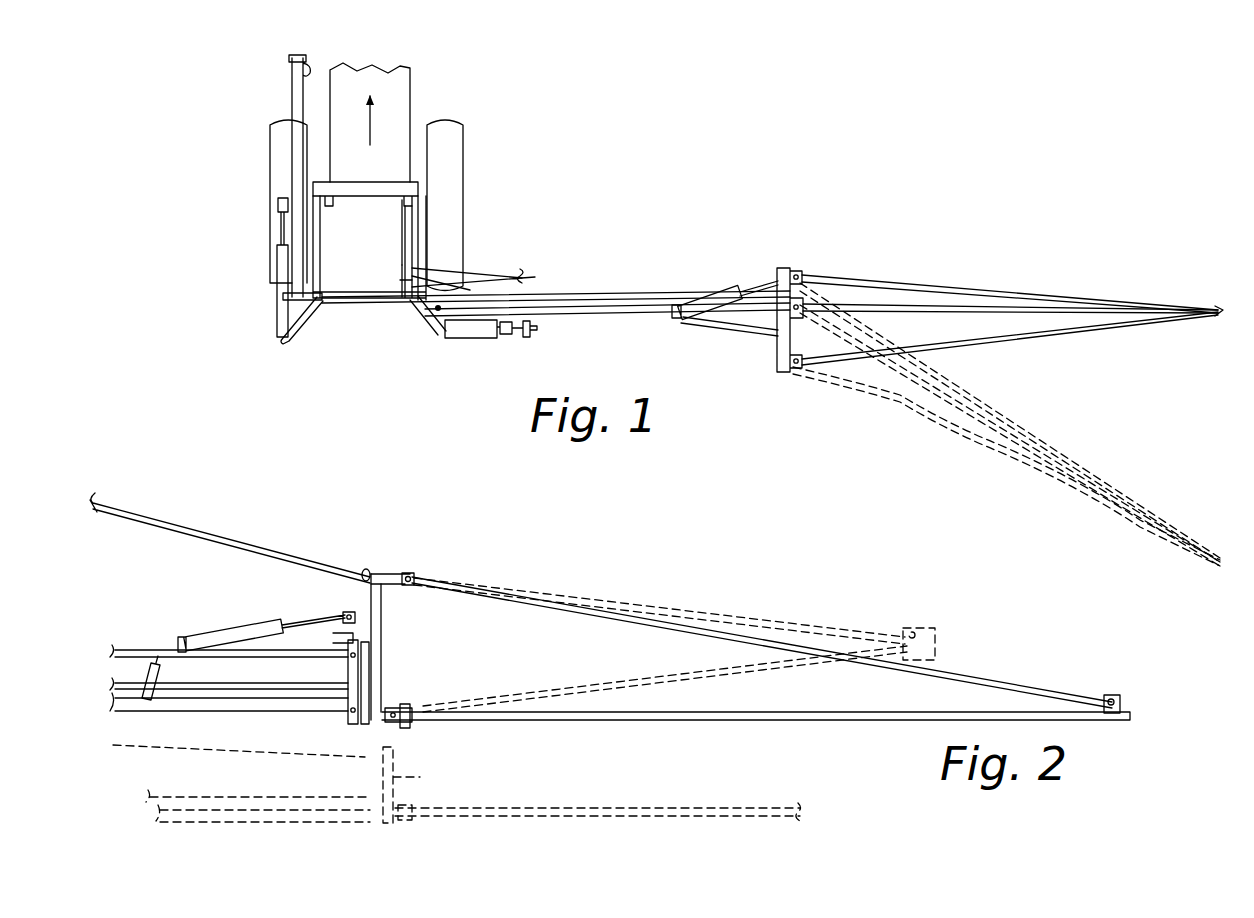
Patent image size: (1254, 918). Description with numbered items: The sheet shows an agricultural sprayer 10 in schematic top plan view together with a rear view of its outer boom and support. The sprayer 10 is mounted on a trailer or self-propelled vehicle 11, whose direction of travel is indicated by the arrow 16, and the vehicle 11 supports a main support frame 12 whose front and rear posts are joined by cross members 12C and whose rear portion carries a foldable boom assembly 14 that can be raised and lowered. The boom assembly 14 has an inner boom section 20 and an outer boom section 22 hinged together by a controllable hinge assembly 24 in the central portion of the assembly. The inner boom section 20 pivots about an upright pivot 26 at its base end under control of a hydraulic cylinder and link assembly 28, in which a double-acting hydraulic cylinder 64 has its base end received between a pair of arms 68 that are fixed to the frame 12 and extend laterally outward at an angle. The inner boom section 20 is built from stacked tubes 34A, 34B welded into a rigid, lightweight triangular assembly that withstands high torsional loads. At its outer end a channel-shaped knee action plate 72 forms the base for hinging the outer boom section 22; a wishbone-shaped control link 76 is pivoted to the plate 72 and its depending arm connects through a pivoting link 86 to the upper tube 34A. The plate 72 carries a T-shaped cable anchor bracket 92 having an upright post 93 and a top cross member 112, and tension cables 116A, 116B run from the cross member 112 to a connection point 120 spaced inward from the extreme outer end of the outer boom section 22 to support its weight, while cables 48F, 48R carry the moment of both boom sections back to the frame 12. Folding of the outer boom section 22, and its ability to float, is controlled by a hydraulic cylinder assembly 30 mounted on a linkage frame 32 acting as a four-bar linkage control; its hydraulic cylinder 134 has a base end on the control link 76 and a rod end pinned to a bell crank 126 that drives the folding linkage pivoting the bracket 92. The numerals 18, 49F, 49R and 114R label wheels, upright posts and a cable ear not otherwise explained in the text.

In FIG. 1, the agricultural sprayer 10 is at (462, 113).
In FIG. 1, the vehicle 11 is at (413, 86).
In FIG. 1, the main support frame 12 is at (418, 238).
In FIG. 1, the cross members 12C is at (368, 272).
In FIG. 1, the foldable boom assembly 14 is at (289, 146).
In FIG. 1, the arrow 16 is at (366, 127).
In FIG. 1, the wheel 18 is at (268, 168).
In FIG. 1, the inner boom section 20 is at (300, 67).
In FIG. 2, the inner boom section 20 is at (138, 706).
In FIG. 1, the outer boom section 22 is at (960, 301).
In FIG. 2, the outer boom section 22 is at (600, 807).
In FIG. 1, the hinge assembly 24 is at (759, 334).
In FIG. 2, the hinge assembly 24 is at (391, 666).
In FIG. 1, the upright pivot 26 is at (472, 309).
In FIG. 1, the hydraulic cylinder and link assembly 28 is at (502, 342).
In FIG. 1, the hydraulic cylinder assembly 30 is at (722, 287).
In FIG. 2, the hydraulic cylinder assembly 30 is at (300, 613).
In FIG. 2, the linkage frame 32 is at (167, 649).
In FIG. 2, the upper tube 34A is at (212, 694).
In FIG. 2, the tube 34B is at (258, 705).
In FIG. 1, the front cable 48F is at (468, 266).
In FIG. 1, the rear cable 48R is at (500, 290).
In FIG. 2, the rear cable 48R is at (268, 553).
In FIG. 1, the front upright post 49F is at (403, 265).
In FIG. 1, the rear upright post 49R is at (402, 283).
In FIG. 1, the hydraulic cylinder 64 is at (280, 258).
In FIG. 1, the arms 68 is at (306, 327).
In FIG. 1, the knee action plate 72 is at (798, 292).
In FIG. 2, the knee action plate 72 is at (348, 670).
In FIG. 1, the control link 76 is at (727, 323).
In FIG. 2, the control link 76 is at (184, 658).
In FIG. 2, the pivoting link 86 is at (138, 684).
In FIG. 2, the cable anchor bracket 92 is at (370, 599).
In FIG. 2, the upright post 93 is at (384, 618).
In FIG. 1, the cross member 112 is at (775, 350).
In FIG. 2, the cross member 112 is at (1114, 695).
In FIG. 2, the rear pivot bracket 114R is at (390, 575).
In FIG. 1, the cable 116A is at (852, 279).
In FIG. 1, the cable 116B is at (970, 347).
In FIG. 1, the connection point 120 is at (1218, 316).
In FIG. 1, the bell crank 126 is at (399, 283).
In FIG. 2, the hydraulic cylinder 134 is at (250, 632).